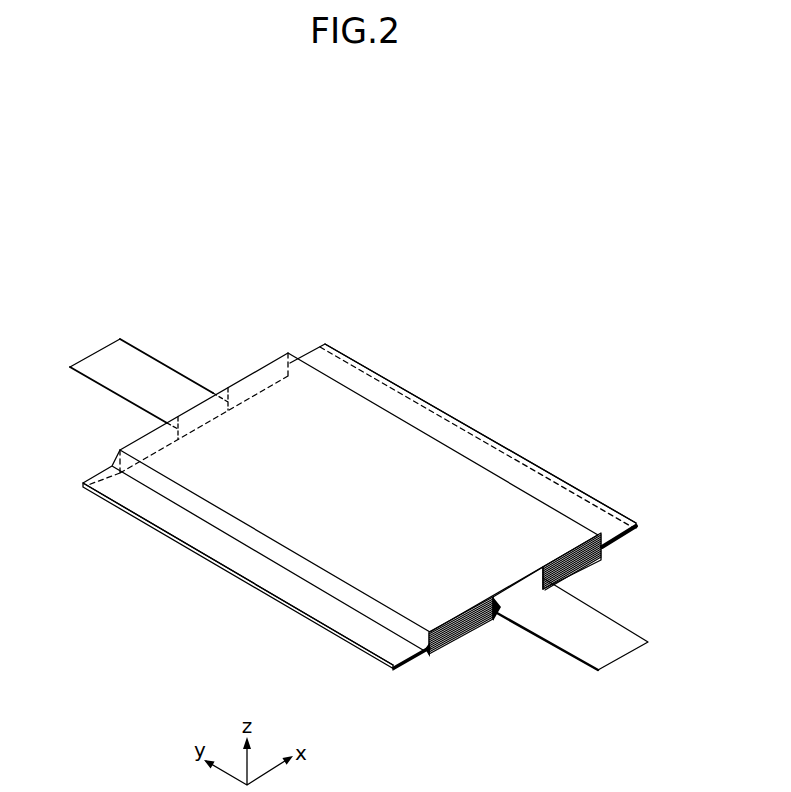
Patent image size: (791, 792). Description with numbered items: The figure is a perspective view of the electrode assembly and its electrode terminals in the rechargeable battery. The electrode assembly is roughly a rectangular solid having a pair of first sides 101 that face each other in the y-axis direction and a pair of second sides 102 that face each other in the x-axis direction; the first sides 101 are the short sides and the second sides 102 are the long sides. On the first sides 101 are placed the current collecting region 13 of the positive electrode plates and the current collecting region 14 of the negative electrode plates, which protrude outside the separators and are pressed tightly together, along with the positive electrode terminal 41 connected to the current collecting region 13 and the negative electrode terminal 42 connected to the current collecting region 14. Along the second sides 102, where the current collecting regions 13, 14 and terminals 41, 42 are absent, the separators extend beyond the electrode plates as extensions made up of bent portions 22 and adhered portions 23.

The first sides 101 is at (257, 370).
The second sides 102 is at (197, 537).
The adhered portions 23 is at (567, 508).
The bent portions 22 is at (611, 548).
The current collecting region 14 is at (513, 598).
The current collecting region 13 is at (180, 438).
The positive electrode terminal 41 is at (104, 355).
The negative electrode terminal 42 is at (590, 653).